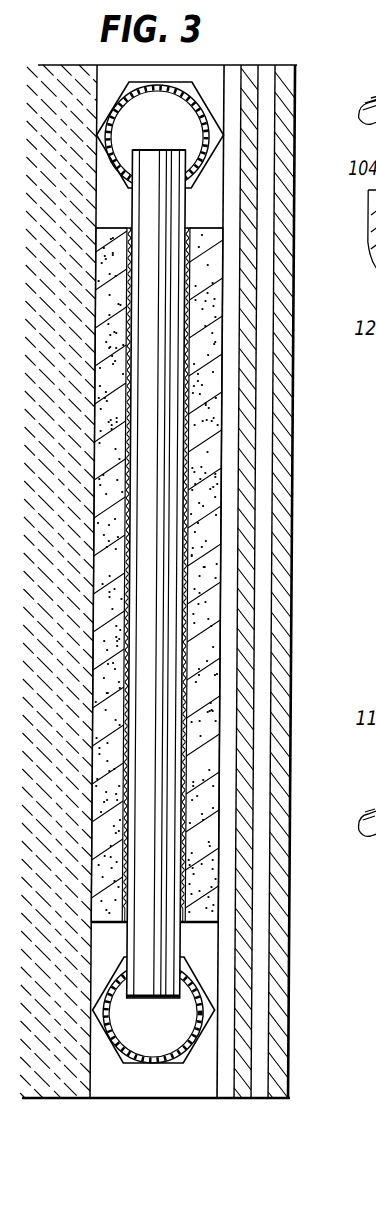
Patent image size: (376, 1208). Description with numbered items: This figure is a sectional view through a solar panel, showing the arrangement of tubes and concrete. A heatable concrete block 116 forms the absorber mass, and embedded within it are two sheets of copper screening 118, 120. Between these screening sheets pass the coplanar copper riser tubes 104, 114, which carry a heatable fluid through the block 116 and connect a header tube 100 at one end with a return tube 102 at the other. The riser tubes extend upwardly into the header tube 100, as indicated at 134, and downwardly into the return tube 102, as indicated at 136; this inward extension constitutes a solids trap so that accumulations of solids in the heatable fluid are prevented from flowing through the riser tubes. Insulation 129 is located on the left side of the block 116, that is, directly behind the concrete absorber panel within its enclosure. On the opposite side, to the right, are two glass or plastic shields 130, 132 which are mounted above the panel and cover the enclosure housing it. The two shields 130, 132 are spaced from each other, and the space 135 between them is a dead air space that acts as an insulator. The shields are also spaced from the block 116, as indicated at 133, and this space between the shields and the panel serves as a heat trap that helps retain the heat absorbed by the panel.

The header tube 100 is at (117, 100).
The return tube 102 is at (205, 1038).
The copper tube 104 is at (170, 533).
The copper tube 114 is at (252, 573).
The concrete block 116 is at (108, 292).
The sheet of copper screening 118 is at (189, 230).
The sheet of copper screening 120 is at (101, 248).
The insulation 129 is at (77, 1077).
The glass or plastic shield 130 is at (260, 950).
The glass or plastic shield 132 is at (296, 920).
The space between shields and block 133 is at (234, 1092).
The upward extension of riser tubes into header tube 134 is at (131, 158).
The dead air space 135 is at (270, 1093).
The downward extension of riser tubes into return tube 136 is at (187, 993).